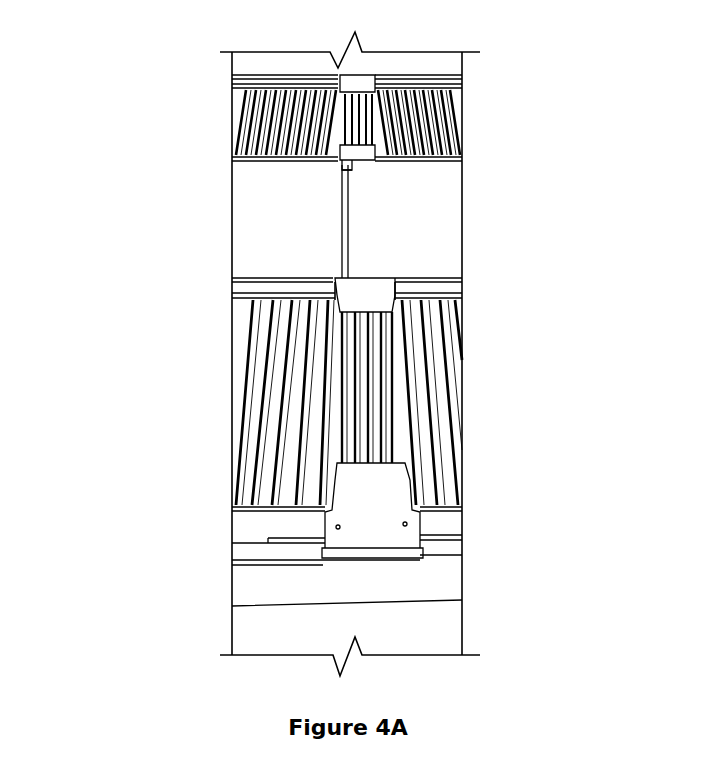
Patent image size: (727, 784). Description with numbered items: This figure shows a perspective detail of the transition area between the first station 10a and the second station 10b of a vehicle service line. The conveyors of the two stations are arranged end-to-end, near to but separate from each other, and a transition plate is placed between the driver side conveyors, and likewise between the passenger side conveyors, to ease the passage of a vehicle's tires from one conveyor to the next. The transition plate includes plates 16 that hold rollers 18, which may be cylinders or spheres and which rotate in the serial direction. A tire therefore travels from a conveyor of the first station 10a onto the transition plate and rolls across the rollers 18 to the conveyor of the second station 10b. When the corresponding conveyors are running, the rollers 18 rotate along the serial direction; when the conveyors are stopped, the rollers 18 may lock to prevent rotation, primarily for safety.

The first station 10a is at (545, 283).
The second station 10b is at (150, 353).
The plate 16 is at (378, 285).
The roller 18 is at (360, 330).